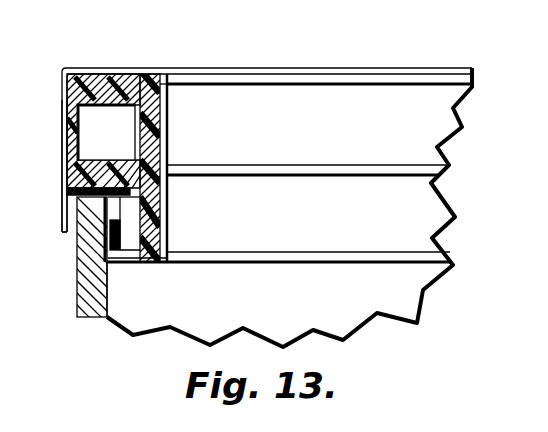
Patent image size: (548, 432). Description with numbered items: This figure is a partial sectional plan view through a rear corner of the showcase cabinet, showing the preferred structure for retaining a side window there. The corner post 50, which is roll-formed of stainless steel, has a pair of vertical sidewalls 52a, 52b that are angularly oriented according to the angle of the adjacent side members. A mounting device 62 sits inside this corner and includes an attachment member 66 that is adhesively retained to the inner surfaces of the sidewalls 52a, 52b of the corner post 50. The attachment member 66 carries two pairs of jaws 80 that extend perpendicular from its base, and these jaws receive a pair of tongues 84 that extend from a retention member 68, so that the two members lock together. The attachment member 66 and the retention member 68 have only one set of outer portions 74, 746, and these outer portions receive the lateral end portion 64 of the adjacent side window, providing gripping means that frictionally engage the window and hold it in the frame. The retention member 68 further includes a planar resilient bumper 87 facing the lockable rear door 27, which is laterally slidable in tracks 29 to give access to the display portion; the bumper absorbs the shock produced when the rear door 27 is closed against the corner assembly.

The rear door 27 is at (372, 102).
The track 29 is at (446, 205).
The corner post 50 is at (62, 68).
The vertical sidewall 52a is at (57, 98).
The vertical sidewall 52b is at (118, 67).
The jaws 80 is at (98, 122).
The tongue 84 is at (140, 76).
The planar resilient bumper 87 is at (172, 98).
The lateral end portion 64 is at (76, 302).
The outer portion 74 is at (72, 224).
The outer portion 746 is at (168, 215).
The retention member 68 is at (168, 252).
The attachment member 66 is at (70, 195).
The mounting device 62 is at (122, 271).